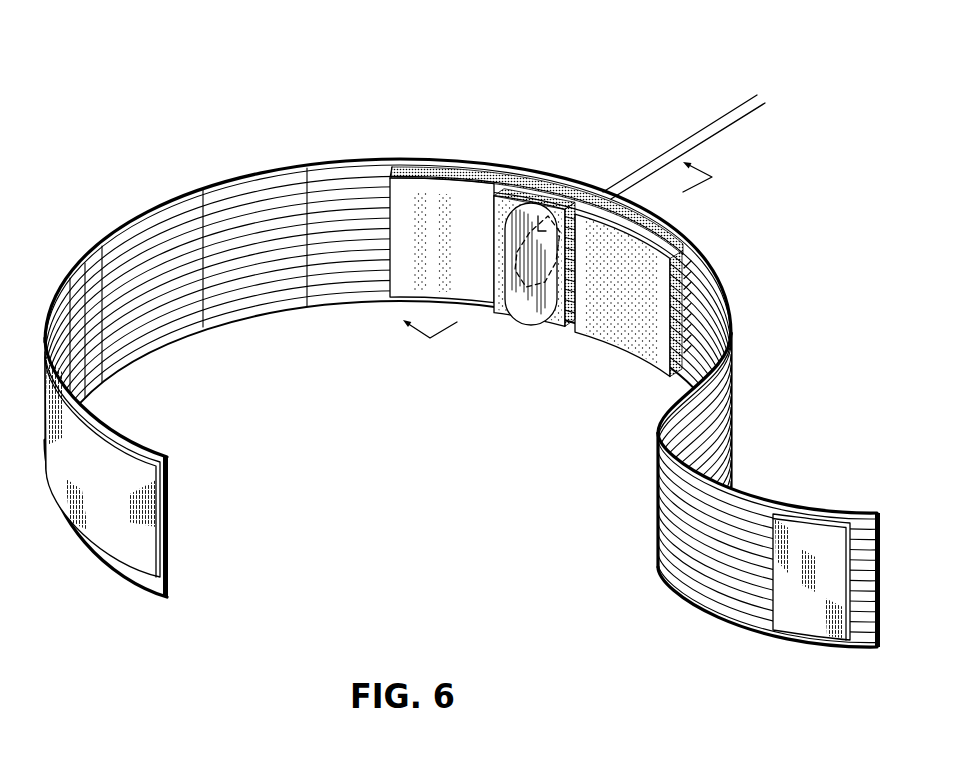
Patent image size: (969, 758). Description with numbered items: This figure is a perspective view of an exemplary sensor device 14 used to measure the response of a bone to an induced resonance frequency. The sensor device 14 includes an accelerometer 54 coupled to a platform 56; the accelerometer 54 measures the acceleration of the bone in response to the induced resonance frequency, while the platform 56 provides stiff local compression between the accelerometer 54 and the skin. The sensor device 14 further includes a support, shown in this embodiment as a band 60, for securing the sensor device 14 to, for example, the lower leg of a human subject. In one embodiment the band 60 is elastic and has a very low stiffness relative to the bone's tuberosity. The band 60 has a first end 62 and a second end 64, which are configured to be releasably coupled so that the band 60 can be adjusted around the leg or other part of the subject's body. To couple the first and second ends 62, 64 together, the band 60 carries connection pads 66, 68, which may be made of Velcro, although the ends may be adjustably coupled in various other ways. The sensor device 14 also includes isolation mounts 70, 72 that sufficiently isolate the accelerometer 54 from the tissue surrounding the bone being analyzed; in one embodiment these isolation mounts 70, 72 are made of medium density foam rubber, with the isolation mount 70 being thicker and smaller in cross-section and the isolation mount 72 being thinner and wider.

The sensor device 14 is at (462, 375).
The accelerometer 54 is at (541, 183).
The platform 56 is at (522, 303).
The band 60 is at (388, 323).
The first end 62 is at (158, 600).
The second end 64 is at (853, 650).
The connection pad 66 is at (134, 548).
The connection pad 68 is at (791, 622).
The isolation mount 70 is at (553, 327).
The isolation mount 72 is at (624, 333).